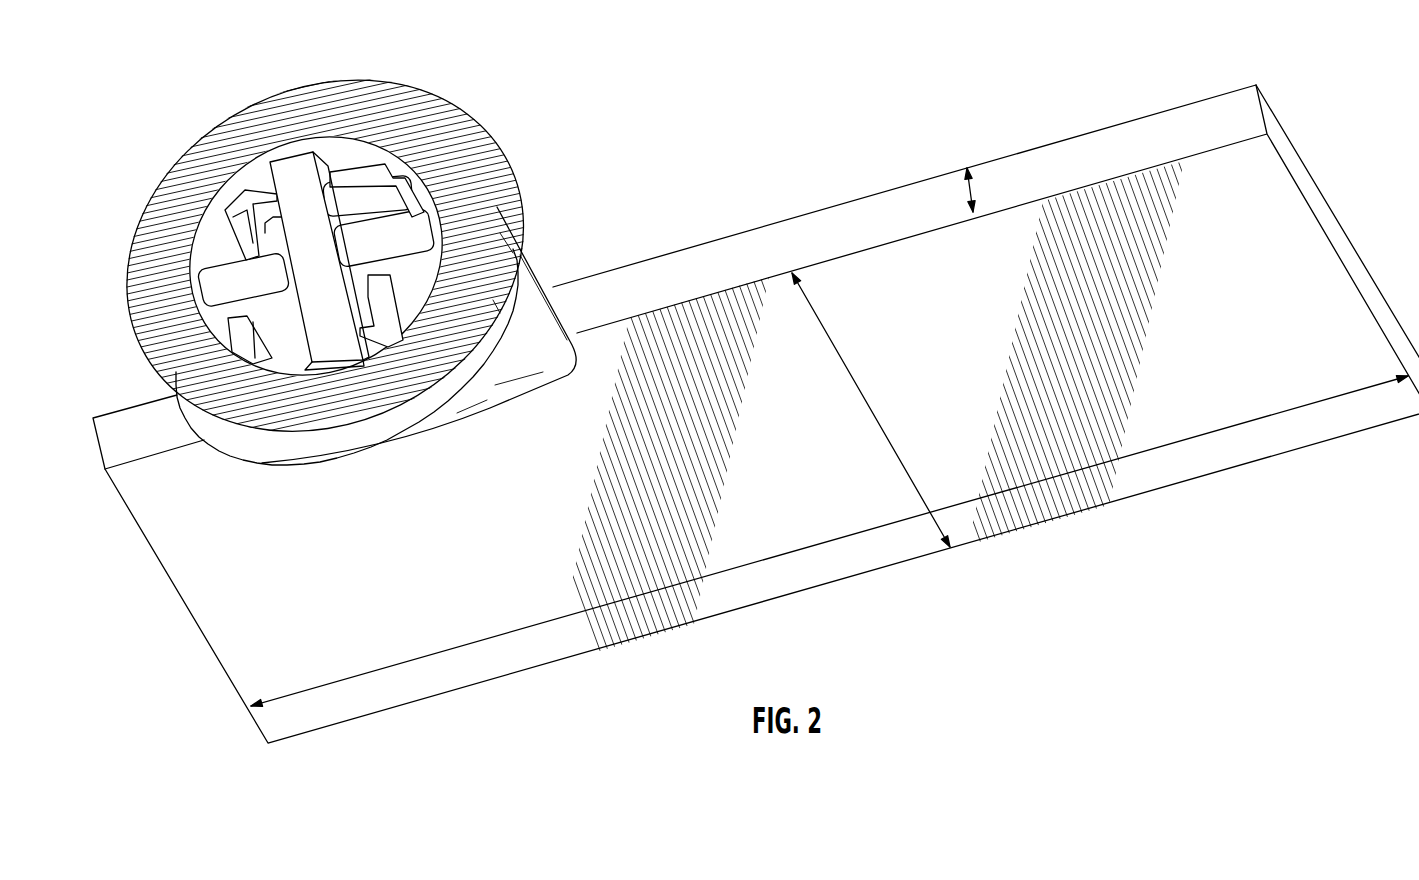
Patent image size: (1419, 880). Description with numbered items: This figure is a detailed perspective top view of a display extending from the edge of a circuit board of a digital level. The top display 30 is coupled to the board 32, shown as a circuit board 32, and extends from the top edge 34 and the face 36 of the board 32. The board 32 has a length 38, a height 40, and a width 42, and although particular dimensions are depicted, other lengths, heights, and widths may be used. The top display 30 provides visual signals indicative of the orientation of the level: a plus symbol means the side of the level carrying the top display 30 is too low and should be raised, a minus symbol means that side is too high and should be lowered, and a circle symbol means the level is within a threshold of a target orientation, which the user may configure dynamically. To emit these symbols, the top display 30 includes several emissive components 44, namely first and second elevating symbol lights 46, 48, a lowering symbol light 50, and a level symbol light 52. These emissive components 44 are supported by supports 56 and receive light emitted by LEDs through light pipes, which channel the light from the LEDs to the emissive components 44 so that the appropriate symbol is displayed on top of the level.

The top display 30 is at (238, 108).
The circuit board 32 is at (1256, 83).
The top edge 34 is at (1167, 132).
The face 36 is at (1281, 222).
The length 38 is at (1238, 423).
The height 40 is at (913, 487).
The width 42 is at (971, 197).
The emissive components 44 is at (433, 236).
The first elevating symbol light 46 is at (202, 257).
The second elevating symbol light 48 is at (424, 235).
The lowering symbol light 50 is at (305, 170).
The level symbol light 52 is at (190, 150).
The supports 56 is at (246, 208).